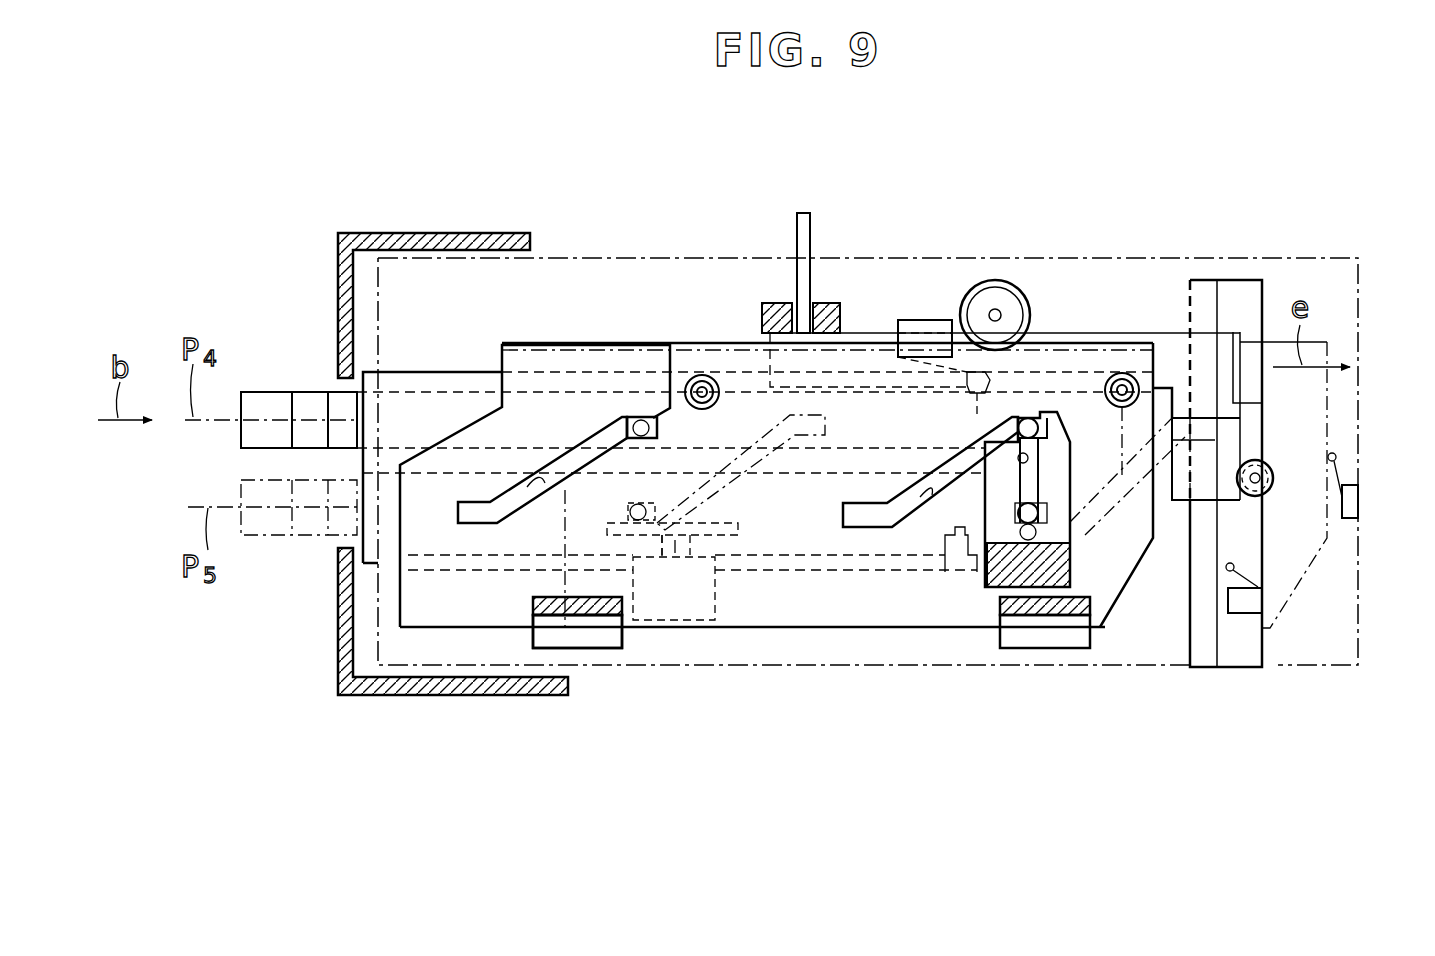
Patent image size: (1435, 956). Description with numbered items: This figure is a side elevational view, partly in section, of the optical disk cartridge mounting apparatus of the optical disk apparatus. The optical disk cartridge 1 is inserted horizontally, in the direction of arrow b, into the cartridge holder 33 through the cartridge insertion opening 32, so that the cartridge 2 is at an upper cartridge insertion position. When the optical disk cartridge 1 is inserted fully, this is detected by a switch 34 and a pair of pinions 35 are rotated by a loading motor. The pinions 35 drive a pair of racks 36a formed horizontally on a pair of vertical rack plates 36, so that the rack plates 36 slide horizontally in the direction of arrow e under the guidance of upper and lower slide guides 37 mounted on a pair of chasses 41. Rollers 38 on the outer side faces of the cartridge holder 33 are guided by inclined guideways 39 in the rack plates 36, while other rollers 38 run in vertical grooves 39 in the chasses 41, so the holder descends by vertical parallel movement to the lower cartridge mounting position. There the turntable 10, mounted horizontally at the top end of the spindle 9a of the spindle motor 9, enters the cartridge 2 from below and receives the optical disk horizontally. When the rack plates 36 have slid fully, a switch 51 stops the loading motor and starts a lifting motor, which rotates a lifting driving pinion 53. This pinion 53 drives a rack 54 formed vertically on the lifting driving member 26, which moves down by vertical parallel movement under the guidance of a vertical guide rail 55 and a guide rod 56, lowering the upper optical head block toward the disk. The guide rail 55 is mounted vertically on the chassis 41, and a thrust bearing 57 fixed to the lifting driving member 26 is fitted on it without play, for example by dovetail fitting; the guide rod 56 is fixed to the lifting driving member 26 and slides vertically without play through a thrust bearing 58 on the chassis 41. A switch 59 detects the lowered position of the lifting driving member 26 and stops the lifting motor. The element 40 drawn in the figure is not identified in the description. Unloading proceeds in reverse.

The optical disk cartridge 1 is at (268, 378).
The cartridge 2 is at (262, 496).
The spindle motor 9 is at (654, 600).
The spindle 9a is at (677, 548).
The turntable 10 is at (728, 565).
The lifting driving member 26 is at (1163, 350).
The cartridge insertion opening 32 is at (337, 383).
The cartridge holder 33 is at (427, 387).
The switch 34 is at (925, 320).
The pinions 35 is at (985, 300).
The rack plates 36 is at (733, 360).
The racks 36a is at (1093, 343).
The slide guides 37 is at (598, 640).
The rollers 38 is at (640, 505).
The inclined guideways and vertical grooves 39 is at (543, 483).
The belt unit 40 is at (1021, 457).
The chasses 41 is at (830, 667).
The switch 51 is at (1358, 502).
The lifting driving pinion 53 is at (1273, 462).
The rack 54 is at (1262, 403).
The guide rail 55 is at (1207, 310).
The guide rod 56 is at (807, 240).
The thrust bearing 57 is at (1180, 494).
The thrust bearing 58 is at (778, 305).
The switch 59 is at (1253, 600).